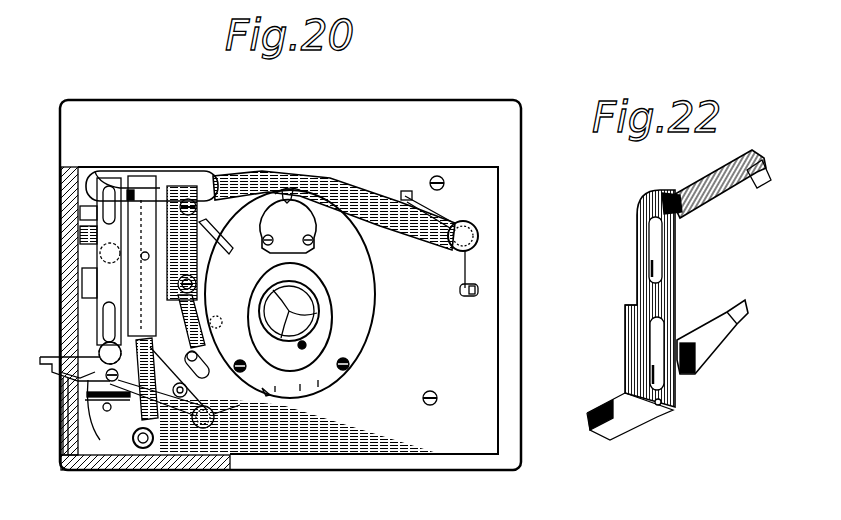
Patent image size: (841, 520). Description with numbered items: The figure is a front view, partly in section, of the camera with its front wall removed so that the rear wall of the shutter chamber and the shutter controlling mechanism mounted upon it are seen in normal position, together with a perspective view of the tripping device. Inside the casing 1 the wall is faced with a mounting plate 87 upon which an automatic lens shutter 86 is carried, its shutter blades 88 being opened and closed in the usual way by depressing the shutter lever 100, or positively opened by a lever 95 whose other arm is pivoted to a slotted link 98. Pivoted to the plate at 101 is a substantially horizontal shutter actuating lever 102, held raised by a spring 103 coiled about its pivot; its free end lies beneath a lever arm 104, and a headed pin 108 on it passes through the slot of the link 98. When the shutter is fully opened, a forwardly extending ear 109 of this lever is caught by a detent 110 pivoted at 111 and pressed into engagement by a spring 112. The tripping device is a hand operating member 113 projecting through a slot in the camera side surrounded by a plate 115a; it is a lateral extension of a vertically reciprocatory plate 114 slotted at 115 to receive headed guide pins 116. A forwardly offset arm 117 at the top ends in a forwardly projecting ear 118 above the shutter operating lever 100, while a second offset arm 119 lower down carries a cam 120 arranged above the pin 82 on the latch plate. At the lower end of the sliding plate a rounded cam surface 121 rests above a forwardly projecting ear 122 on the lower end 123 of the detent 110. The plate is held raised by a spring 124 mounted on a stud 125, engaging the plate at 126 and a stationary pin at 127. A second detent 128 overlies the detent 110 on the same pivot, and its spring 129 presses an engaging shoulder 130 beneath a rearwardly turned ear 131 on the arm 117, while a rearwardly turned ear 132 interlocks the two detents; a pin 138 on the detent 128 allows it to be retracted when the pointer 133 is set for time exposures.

In FIG. 20, the casing 1 is at (377, 102).
In FIG. 20, the pin 82 is at (208, 362).
In FIG. 20, the automatic lens shutter 86 is at (374, 311).
In FIG. 20, the mounting plate 87 is at (288, 310).
In FIG. 20, the shutter blades 88 is at (310, 308).
In FIG. 20, the lever 95 is at (200, 306).
In FIG. 20, the link 98 is at (216, 254).
In FIG. 20, the shutter lever 100 is at (205, 218).
In FIG. 20, the pivot 101 is at (461, 250).
In FIG. 20, the shutter actuating lever 102 is at (340, 182).
In FIG. 20, the spring 103 is at (468, 222).
In FIG. 20, the lever arm 104 is at (80, 218).
In FIG. 20, the headed pin 108 is at (216, 182).
In FIG. 20, the ear 109 is at (188, 171).
In FIG. 20, the detent 110 is at (80, 214).
In FIG. 20, the pivot 111 is at (179, 397).
In FIG. 20, the spring 112 is at (140, 430).
In FIG. 20, the hand operating member 113 is at (45, 358).
In FIG. 22, the hand operating member 113 is at (592, 432).
In FIG. 20, the vertically reciprocatory plate 114 is at (95, 284).
In FIG. 22, the vertically reciprocatory plate 114 is at (645, 300).
In FIG. 20, the slot 115 is at (100, 268).
In FIG. 22, the slot 115 is at (650, 235).
In FIG. 20, the plate 115a is at (65, 458).
In FIG. 20, the headed guide pins 116 is at (70, 372).
In FIG. 22, the forwardly offset arm 117 is at (712, 185).
In FIG. 20, the ear 118 is at (278, 190).
In FIG. 22, the ear 118 is at (762, 187).
In FIG. 20, the forwardly offset arm 119 is at (196, 287).
In FIG. 22, the forwardly offset arm 119 is at (722, 338).
In FIG. 20, the cam 120 is at (218, 327).
In FIG. 22, the cam 120 is at (740, 320).
In FIG. 20, the cam surface 121 is at (103, 408).
In FIG. 22, the cam surface 121 is at (662, 406).
In FIG. 20, the ear 122 is at (90, 400).
In FIG. 20, the lower end 123 is at (187, 417).
In FIG. 20, the spring 124 is at (187, 426).
In FIG. 20, the stud 125 is at (214, 426).
In FIG. 20, the engaging point 126 is at (106, 376).
In FIG. 20, the stationary pin 127 is at (143, 448).
In FIG. 20, the detent 128 is at (146, 260).
In FIG. 20, the spring 129 is at (112, 342).
In FIG. 20, the engaging shoulder 130 is at (157, 200).
In FIG. 20, the ear 131 is at (132, 189).
In FIG. 22, the ear 131 is at (680, 215).
In FIG. 20, the ear 132 is at (205, 279).
In FIG. 20, the pointer 133 is at (289, 188).
In FIG. 20, the pin 138 is at (110, 262).